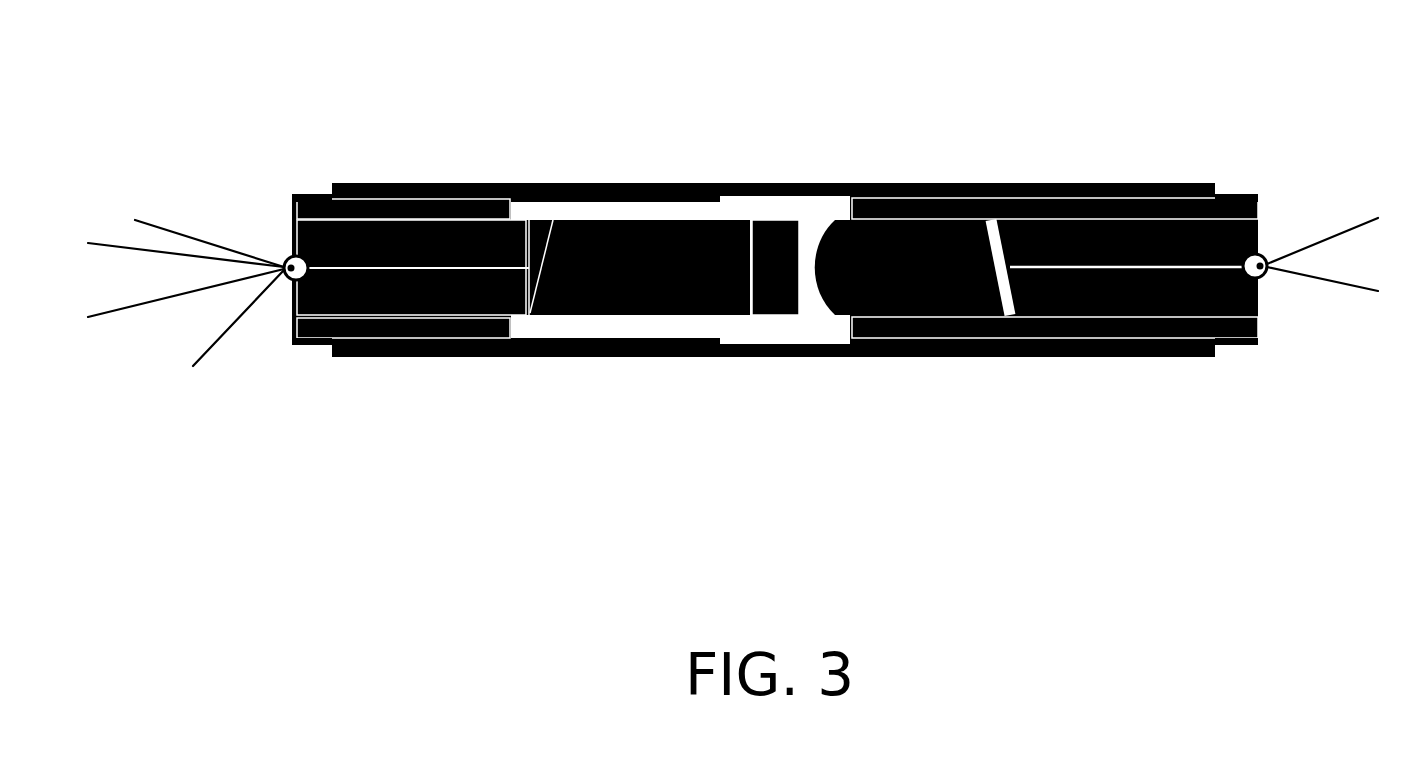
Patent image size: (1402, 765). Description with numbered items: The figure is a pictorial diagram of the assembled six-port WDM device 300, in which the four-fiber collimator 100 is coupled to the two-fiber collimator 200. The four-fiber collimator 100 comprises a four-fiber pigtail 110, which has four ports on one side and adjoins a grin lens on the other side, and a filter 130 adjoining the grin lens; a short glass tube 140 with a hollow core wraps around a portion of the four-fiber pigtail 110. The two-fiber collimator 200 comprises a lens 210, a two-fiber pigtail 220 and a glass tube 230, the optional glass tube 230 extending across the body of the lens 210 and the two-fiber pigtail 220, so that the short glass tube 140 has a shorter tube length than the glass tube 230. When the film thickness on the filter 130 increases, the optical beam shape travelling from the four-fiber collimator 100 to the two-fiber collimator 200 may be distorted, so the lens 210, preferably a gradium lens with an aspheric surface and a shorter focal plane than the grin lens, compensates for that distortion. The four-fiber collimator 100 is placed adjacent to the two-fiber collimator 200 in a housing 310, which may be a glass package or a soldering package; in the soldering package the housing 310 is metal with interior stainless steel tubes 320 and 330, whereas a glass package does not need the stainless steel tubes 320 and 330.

The 4-fiber collimator 100 is at (310, 285).
The 4-fiber pigtail 110 is at (413, 267).
The filter 130 is at (775, 267).
The short glass tube 140 is at (403, 272).
The 2-fiber collimator 200 is at (1222, 298).
The lens 210 is at (912, 267).
The 2-fiber pigtail 220 is at (1131, 267).
The glass tube 230 is at (1055, 269).
The six-port WDM device 300 is at (733, 320).
The housing 310 is at (628, 183).
The stainless steel tube 320 is at (312, 194).
The stainless steel tube 330 is at (1225, 193).